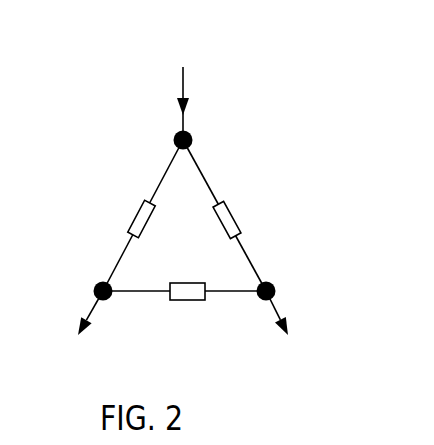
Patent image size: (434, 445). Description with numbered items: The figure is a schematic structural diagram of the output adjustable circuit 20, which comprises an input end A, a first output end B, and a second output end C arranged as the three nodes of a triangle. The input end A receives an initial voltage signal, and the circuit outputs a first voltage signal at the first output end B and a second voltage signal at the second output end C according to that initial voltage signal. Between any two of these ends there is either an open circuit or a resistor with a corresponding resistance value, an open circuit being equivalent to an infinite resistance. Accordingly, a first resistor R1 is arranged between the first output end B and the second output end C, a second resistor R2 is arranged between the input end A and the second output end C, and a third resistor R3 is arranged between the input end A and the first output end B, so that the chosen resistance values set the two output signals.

The output adjustable circuit 20 is at (116, 35).
The first resistor R1 is at (188, 309).
The second resistor R2 is at (247, 219).
The third resistor R3 is at (125, 218).